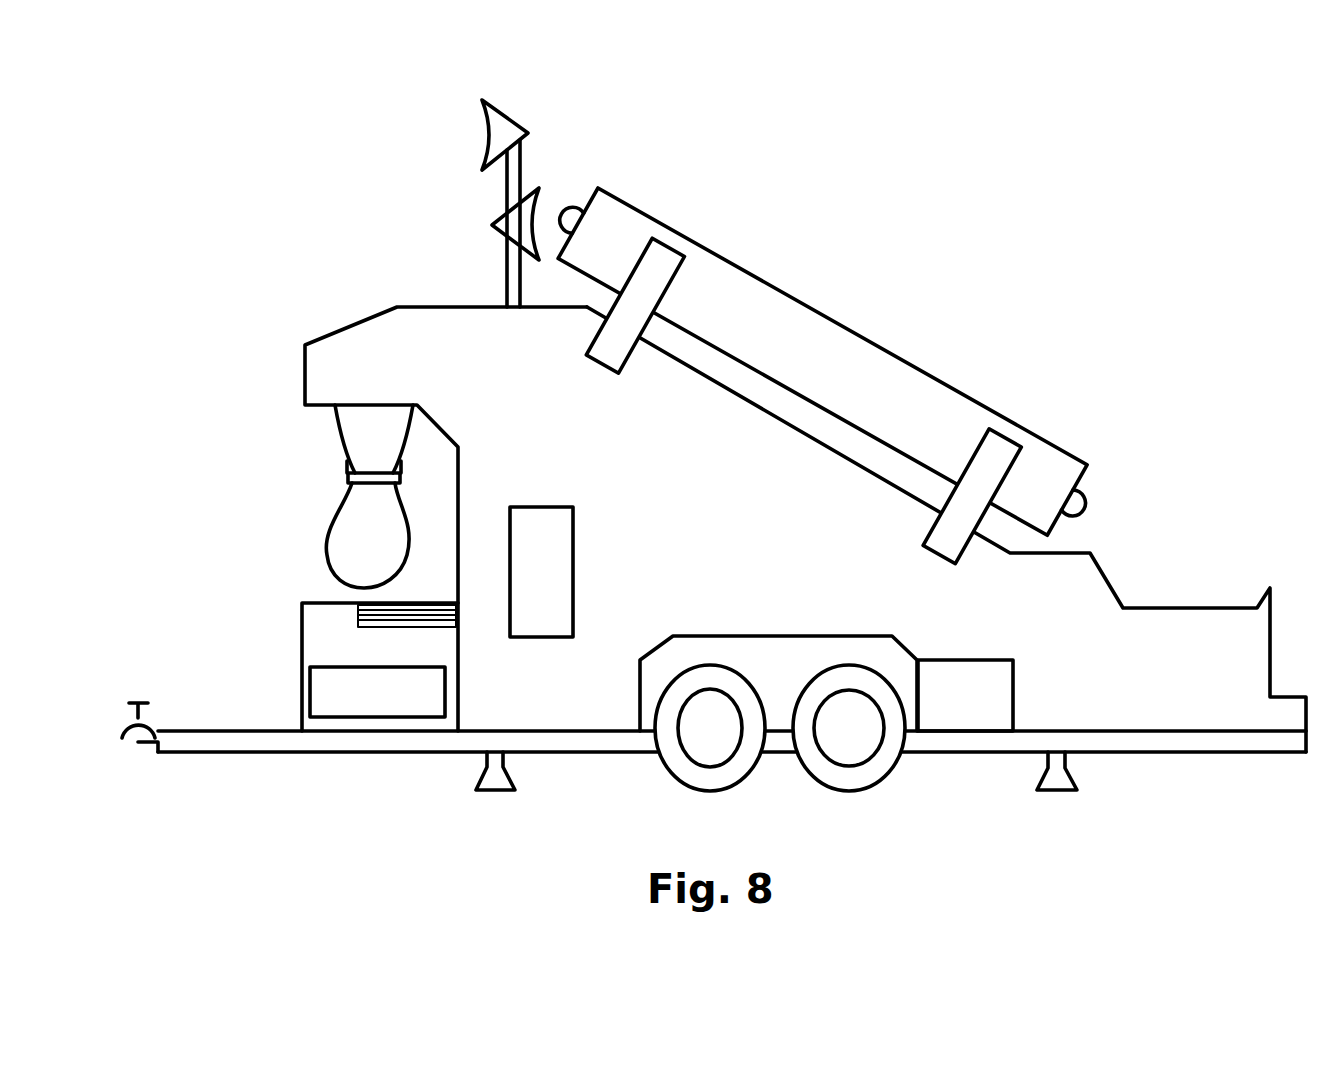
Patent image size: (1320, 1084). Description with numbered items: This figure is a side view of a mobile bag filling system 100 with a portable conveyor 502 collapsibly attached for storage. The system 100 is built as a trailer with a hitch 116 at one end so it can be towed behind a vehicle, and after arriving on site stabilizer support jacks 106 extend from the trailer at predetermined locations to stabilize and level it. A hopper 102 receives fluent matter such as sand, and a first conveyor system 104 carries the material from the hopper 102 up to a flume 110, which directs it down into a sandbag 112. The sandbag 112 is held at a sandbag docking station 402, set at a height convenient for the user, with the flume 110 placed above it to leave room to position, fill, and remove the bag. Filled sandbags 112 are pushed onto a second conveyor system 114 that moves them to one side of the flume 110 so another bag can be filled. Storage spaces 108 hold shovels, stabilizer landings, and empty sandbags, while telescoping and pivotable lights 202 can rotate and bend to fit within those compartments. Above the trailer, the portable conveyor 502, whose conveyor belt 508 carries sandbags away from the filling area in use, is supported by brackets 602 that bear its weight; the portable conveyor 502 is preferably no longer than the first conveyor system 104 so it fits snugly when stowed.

The mobile bag filling system 100 is at (305, 204).
The hopper 102 is at (1197, 607).
The first conveyor system 104 is at (755, 407).
The stabilizer support jacks 106 is at (505, 765).
The storage spaces 108 is at (575, 572).
The flume 110 is at (367, 448).
The sandbag 112 is at (367, 540).
The second conveyor system 114 is at (408, 628).
The hitch 116 is at (141, 742).
The telescoping and pivotable lights 202 is at (488, 140).
The sandbag docking station 402 is at (300, 627).
The portable conveyor 502 is at (803, 292).
The conveyor belt 508 is at (1083, 518).
The brackets 602 is at (683, 256).